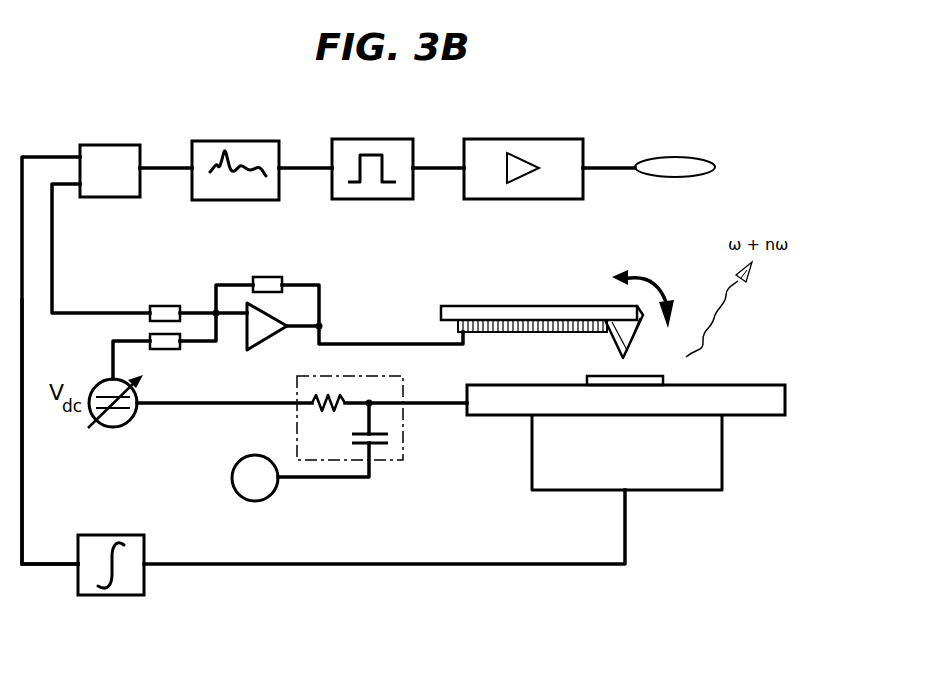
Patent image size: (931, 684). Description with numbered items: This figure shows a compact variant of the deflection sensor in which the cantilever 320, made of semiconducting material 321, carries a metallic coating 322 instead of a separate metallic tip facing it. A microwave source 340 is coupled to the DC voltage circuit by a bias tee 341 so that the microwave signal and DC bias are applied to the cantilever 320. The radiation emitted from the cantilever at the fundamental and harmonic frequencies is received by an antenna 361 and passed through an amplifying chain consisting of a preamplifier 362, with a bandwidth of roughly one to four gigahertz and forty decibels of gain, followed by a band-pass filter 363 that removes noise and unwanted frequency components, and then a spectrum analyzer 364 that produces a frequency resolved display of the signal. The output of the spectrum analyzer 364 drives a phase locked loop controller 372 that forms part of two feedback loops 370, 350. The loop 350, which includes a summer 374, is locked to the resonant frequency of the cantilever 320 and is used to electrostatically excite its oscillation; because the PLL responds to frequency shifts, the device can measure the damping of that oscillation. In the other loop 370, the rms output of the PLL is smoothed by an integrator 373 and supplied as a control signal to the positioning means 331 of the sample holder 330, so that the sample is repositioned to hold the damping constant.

The cantilever 320 is at (543, 312).
The semiconducting material 321 is at (520, 306).
The metallic coating 322 is at (572, 322).
The sample holder 330 is at (626, 475).
The positioning means 331 is at (562, 491).
The microwave source 340 is at (275, 499).
The bias tee 341 is at (388, 462).
The feedback loop 350 is at (351, 318).
The antenna 361 is at (695, 157).
The preamplifier 362 is at (562, 139).
The band-pass filter 363 is at (392, 139).
The spectrum analyzer 364 is at (233, 141).
The feedback loop 370 is at (188, 604).
The phase locked loop controller 372 is at (104, 145).
The integrator 373 is at (90, 596).
The summer 374 is at (258, 258).